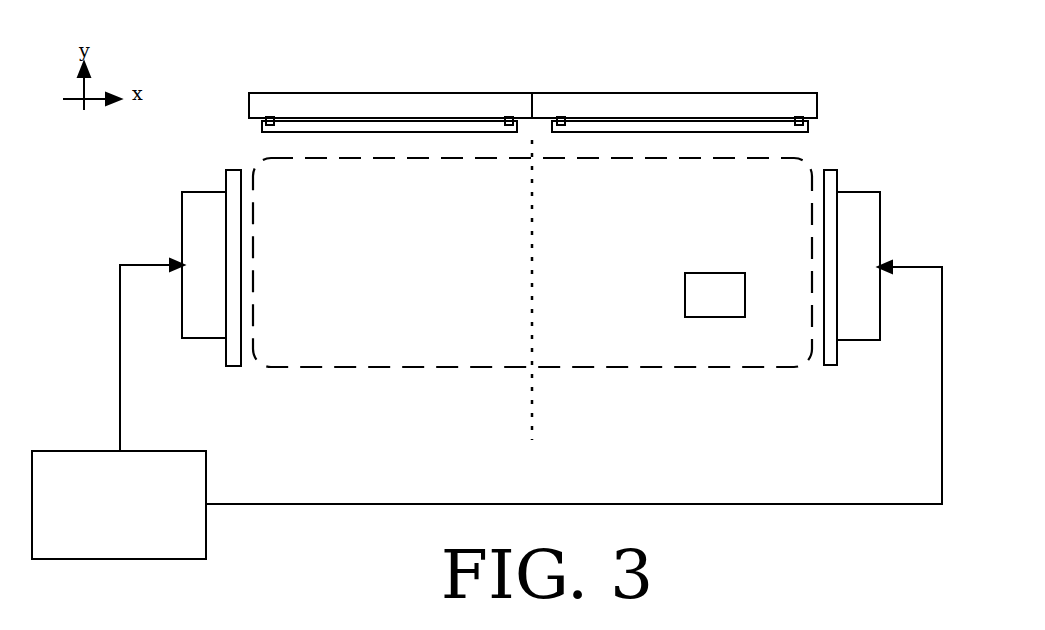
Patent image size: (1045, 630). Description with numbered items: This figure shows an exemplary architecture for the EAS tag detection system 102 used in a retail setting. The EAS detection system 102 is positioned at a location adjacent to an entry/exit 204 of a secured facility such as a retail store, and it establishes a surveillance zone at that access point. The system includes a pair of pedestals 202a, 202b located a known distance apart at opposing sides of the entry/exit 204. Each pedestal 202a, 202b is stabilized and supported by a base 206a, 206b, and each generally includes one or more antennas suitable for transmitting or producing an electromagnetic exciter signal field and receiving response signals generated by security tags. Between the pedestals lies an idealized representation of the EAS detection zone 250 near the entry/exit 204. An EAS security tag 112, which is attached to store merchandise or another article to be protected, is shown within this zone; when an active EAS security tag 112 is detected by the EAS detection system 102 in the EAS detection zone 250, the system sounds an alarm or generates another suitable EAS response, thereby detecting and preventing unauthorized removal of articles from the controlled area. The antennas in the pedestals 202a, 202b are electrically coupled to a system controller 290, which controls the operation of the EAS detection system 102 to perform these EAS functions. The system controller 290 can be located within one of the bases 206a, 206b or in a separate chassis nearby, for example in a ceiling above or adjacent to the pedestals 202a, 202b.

The EAS tag detection system 102 is at (876, 77).
The entry/exit 204 is at (716, 82).
The EAS detection zone 250 is at (573, 367).
The EAS security tag 112 is at (715, 295).
The base 206a is at (182, 210).
The base 206b is at (865, 192).
The pedestal 202a is at (227, 340).
The pedestal 202b is at (838, 348).
The system controller 290 is at (487, 409).